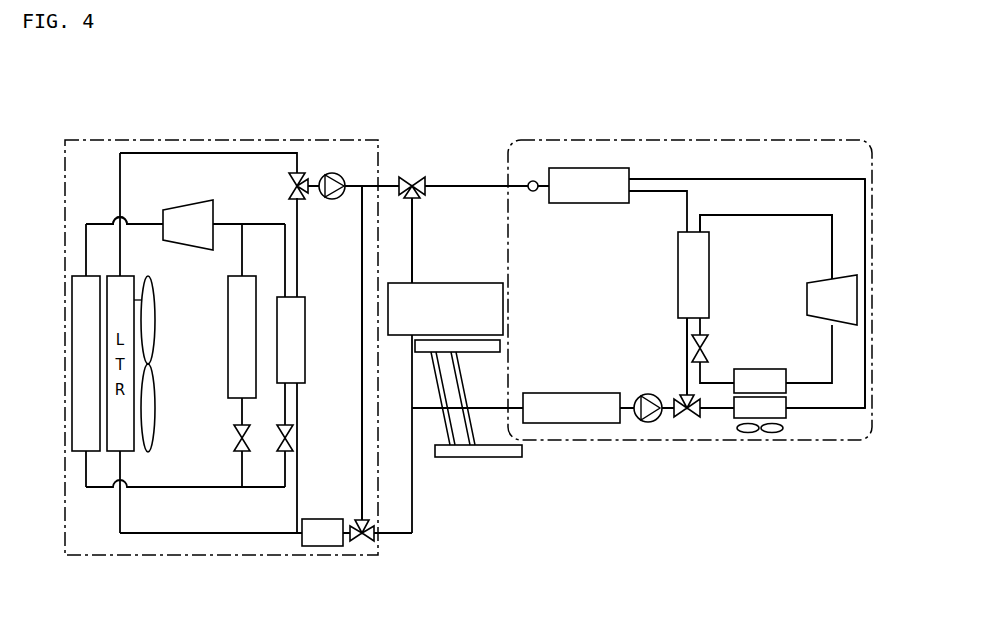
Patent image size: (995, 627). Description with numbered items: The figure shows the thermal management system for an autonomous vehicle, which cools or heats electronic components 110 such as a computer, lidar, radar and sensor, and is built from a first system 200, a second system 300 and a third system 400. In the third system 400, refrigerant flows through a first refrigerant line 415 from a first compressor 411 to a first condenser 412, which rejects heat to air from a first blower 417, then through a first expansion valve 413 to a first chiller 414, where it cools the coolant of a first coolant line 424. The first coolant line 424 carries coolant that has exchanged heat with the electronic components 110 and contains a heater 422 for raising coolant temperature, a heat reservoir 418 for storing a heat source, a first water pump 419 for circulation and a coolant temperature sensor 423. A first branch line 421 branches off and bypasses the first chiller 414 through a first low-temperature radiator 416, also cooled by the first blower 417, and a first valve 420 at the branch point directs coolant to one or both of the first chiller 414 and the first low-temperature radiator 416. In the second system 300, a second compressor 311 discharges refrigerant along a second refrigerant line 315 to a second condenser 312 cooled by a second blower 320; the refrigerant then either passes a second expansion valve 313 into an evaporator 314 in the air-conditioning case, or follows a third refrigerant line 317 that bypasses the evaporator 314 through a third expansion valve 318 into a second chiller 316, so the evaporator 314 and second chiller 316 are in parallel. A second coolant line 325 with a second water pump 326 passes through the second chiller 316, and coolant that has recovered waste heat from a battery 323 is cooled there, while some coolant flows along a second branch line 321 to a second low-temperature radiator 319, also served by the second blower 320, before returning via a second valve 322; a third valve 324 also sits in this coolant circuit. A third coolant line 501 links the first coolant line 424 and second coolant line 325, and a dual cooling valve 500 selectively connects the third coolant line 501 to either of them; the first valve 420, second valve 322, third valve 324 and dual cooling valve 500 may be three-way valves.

The electronic components 110 is at (448, 282).
The first system 200 is at (478, 460).
The second system 300 is at (99, 138).
The second compressor 311 is at (192, 201).
The second condenser 312 is at (70, 274).
The second expansion valve 313 is at (234, 441).
The evaporator 314 is at (226, 340).
The second refrigerant line 315 is at (99, 222).
The second chiller 316 is at (306, 325).
The third refrigerant line 317 is at (262, 489).
The third expansion valve 318 is at (292, 441).
The second low-temperature radiator 319 is at (152, 300).
The second blower 320 is at (155, 410).
The second branch line 321 is at (133, 535).
The second valve 322 is at (297, 172).
The battery 323 is at (322, 547).
The third valve 324 is at (365, 545).
The second coolant line 325 is at (362, 410).
The second water pump 326 is at (332, 172).
The third system 400 is at (690, 138).
The first compressor 411 is at (805, 301).
The first condenser 412 is at (763, 368).
The first expansion valve 413 is at (707, 347).
The first chiller 414 is at (677, 282).
The first refrigerant line 415 is at (773, 218).
The first low-temperature radiator 416 is at (790, 420).
The first blower 417 is at (748, 436).
The heat reservoir 418 is at (572, 425).
The first water pump 419 is at (648, 424).
The first valve 420 is at (688, 424).
The first branch line 421 is at (863, 383).
The heater 422 is at (590, 167).
The coolant temperature sensor 423 is at (531, 180).
The first coolant line 424 is at (686, 364).
The dual cooling valve 500 is at (410, 176).
The third coolant line 501 is at (414, 240).